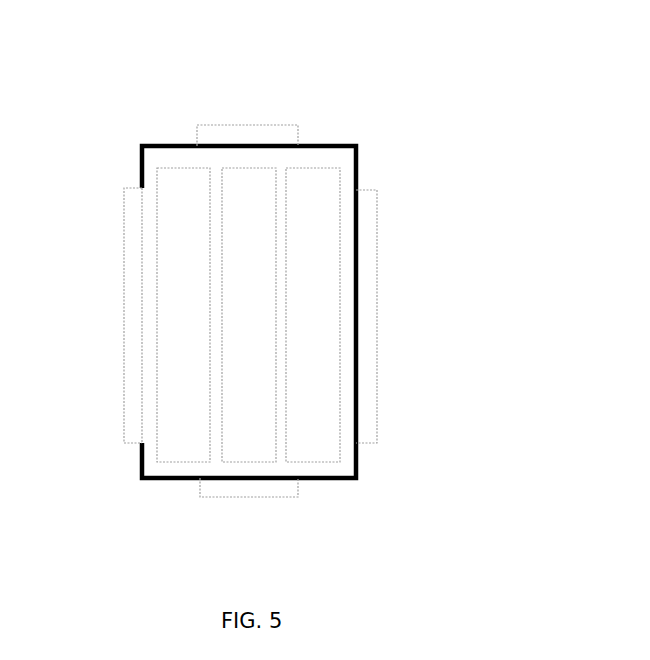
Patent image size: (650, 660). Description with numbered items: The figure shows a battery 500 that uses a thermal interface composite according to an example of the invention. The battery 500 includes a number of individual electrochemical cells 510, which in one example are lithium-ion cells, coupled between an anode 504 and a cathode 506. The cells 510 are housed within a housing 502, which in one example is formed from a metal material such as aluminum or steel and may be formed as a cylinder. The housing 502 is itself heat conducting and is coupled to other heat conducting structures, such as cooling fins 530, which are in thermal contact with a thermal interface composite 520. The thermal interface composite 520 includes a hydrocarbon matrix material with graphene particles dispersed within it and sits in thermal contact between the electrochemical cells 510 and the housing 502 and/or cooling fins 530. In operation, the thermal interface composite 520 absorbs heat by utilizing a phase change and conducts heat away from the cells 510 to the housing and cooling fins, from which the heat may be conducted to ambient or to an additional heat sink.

The battery 500 is at (420, 524).
The housing 502 is at (357, 165).
The anode 504 is at (267, 135).
The cathode 506 is at (255, 488).
The electrochemical cells 510 is at (330, 240).
The thermal interface composite 520 is at (187, 160).
The cooling fins 530 is at (127, 262).